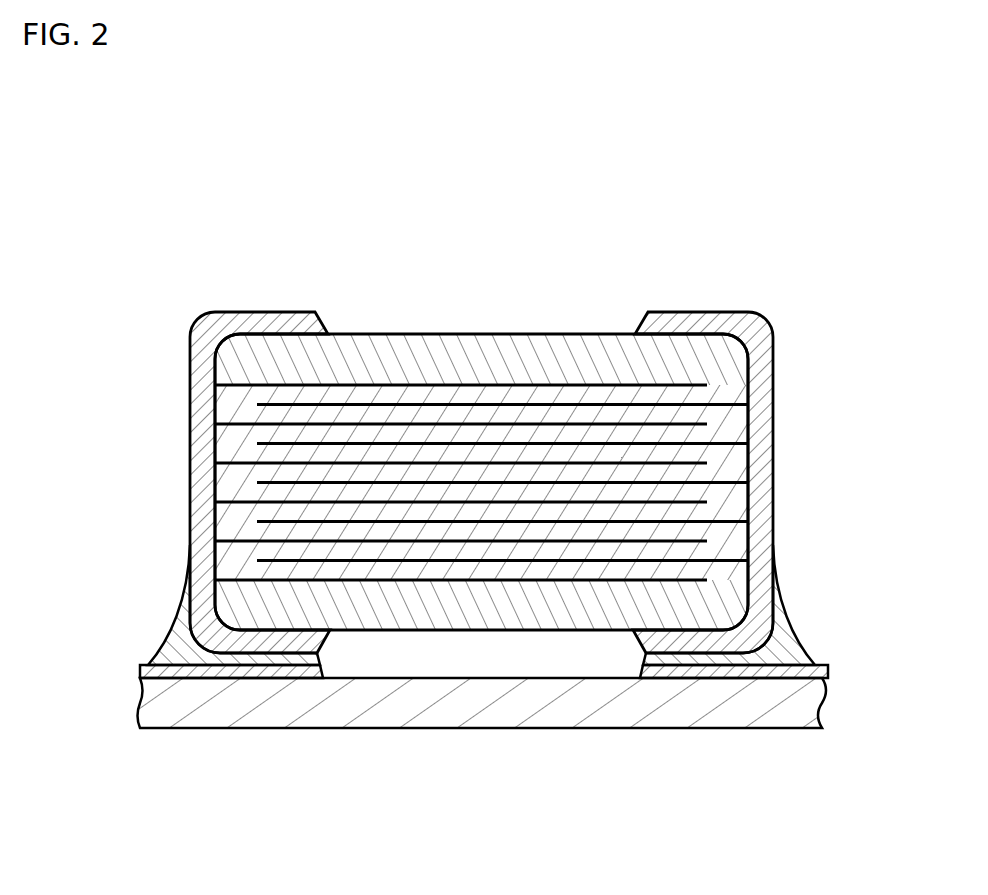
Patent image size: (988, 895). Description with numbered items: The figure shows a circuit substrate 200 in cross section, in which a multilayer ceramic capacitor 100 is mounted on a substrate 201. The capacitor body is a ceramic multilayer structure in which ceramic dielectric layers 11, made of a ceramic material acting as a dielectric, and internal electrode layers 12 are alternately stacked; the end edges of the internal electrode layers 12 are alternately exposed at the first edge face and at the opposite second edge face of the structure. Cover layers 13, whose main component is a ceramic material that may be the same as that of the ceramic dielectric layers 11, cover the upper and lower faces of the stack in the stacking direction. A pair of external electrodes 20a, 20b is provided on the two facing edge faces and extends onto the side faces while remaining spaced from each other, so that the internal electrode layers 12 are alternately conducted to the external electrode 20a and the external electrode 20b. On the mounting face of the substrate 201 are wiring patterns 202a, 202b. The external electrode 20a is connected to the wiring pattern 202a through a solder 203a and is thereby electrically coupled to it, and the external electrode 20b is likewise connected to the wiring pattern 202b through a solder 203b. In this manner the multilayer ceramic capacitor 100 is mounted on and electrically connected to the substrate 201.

The circuit substrate 200 is at (838, 110).
The multilayer ceramic capacitor 100 is at (682, 263).
The ceramic dielectric layer 11 is at (558, 413).
The internal electrode layer 12 is at (440, 420).
The cover layer 13 is at (342, 353).
The external electrode 20a is at (213, 312).
The external electrode 20b is at (737, 312).
The substrate 201 is at (623, 722).
The wiring pattern 202a is at (140, 669).
The wiring pattern 202b is at (828, 669).
The solder 203a is at (165, 637).
The solder 203b is at (795, 637).